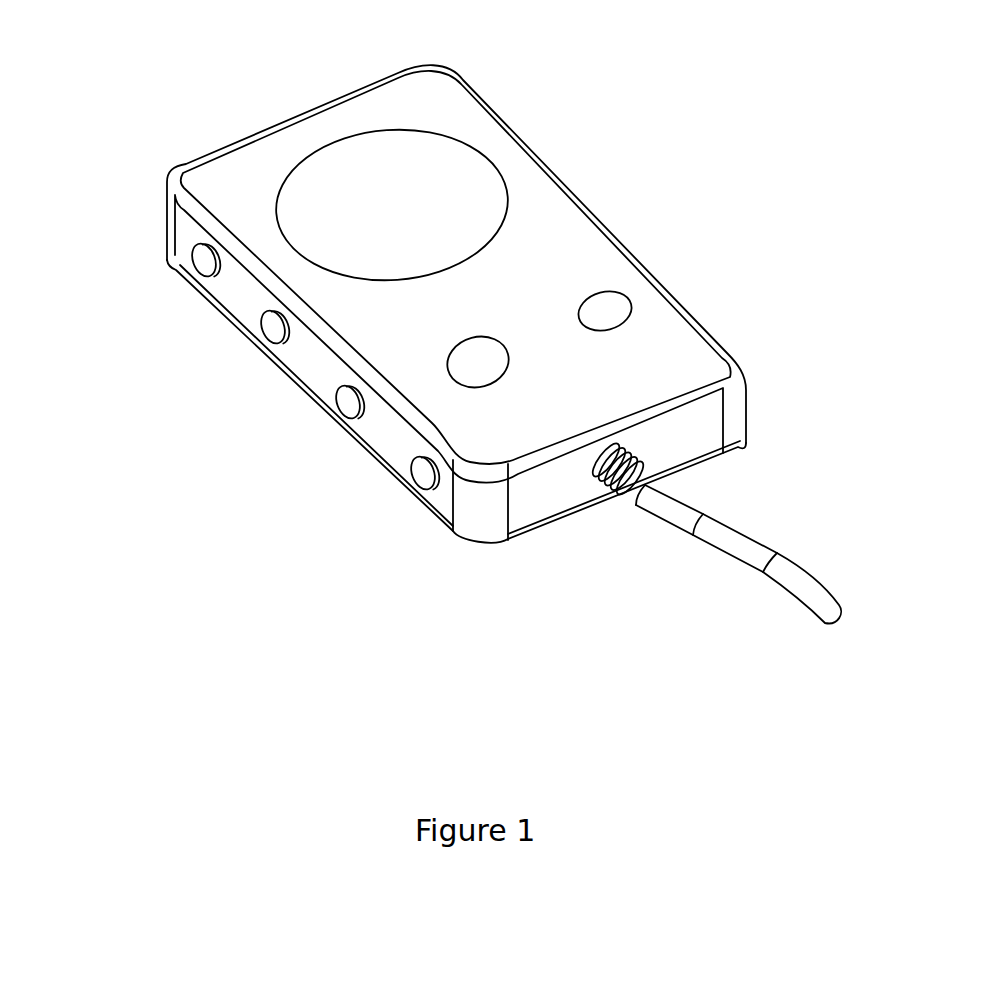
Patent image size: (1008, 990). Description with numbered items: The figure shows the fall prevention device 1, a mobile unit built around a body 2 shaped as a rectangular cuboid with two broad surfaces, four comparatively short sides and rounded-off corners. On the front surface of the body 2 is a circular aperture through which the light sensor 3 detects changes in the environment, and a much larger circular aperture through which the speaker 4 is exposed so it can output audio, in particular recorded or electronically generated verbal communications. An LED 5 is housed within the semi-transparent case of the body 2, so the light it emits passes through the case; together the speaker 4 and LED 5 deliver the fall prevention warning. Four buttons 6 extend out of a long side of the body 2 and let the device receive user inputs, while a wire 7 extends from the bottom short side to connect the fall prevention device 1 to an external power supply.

The fall prevention device 1 is at (186, 117).
The body 2 is at (447, 105).
The light sensor 3 is at (460, 220).
The speaker 4 is at (622, 307).
The LED 5 is at (487, 370).
The buttons 6 is at (417, 477).
The wire 7 is at (717, 543).